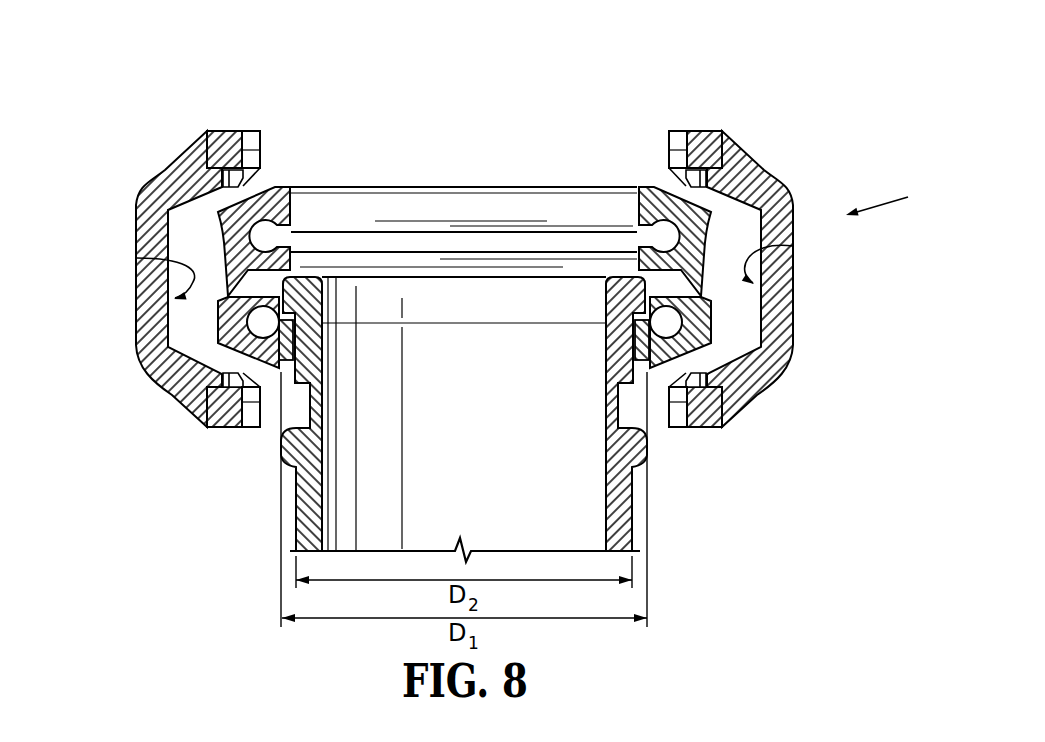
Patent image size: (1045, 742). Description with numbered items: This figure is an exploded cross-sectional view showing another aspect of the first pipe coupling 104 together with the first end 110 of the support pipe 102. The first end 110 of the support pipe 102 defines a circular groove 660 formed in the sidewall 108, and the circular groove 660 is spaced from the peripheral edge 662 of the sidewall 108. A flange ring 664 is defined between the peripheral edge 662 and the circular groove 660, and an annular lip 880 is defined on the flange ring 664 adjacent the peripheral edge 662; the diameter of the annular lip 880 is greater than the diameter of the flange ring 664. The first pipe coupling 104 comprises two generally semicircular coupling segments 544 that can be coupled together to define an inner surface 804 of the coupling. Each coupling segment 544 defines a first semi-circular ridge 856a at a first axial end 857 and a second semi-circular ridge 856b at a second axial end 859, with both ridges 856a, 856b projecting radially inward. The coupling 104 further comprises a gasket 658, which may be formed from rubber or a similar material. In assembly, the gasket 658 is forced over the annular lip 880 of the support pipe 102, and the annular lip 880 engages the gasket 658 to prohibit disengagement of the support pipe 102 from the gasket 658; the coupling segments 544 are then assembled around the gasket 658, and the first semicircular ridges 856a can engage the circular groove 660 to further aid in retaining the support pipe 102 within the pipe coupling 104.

The support pipe 102 is at (620, 525).
The first pipe coupling 104 is at (886, 194).
The sidewall 108 is at (296, 515).
The first end 110 is at (326, 373).
The coupling segment 544 is at (140, 186).
The gasket 658 is at (222, 208).
The circular groove 660 is at (627, 410).
The peripheral edge 662 is at (473, 277).
The flange ring 664 is at (604, 366).
The inner surface 804 is at (137, 258).
The first semi-circular ridge 856a is at (204, 410).
The second semi-circular ridge 856b is at (258, 132).
The first axial end 857 is at (233, 428).
The second axial end 859 is at (220, 130).
The annular lip 880 is at (233, 305).